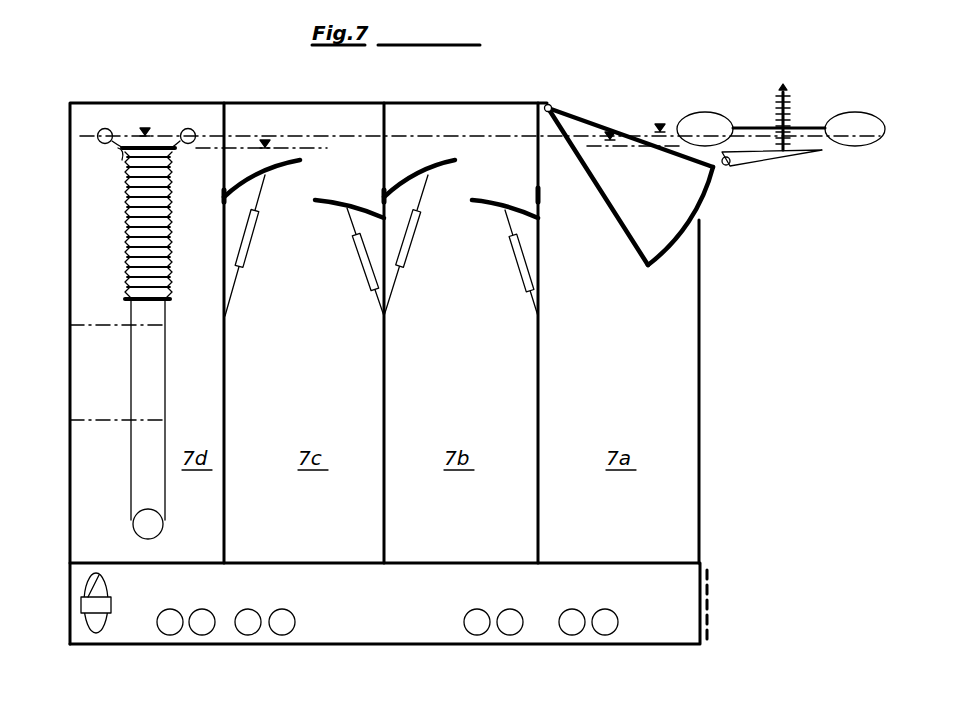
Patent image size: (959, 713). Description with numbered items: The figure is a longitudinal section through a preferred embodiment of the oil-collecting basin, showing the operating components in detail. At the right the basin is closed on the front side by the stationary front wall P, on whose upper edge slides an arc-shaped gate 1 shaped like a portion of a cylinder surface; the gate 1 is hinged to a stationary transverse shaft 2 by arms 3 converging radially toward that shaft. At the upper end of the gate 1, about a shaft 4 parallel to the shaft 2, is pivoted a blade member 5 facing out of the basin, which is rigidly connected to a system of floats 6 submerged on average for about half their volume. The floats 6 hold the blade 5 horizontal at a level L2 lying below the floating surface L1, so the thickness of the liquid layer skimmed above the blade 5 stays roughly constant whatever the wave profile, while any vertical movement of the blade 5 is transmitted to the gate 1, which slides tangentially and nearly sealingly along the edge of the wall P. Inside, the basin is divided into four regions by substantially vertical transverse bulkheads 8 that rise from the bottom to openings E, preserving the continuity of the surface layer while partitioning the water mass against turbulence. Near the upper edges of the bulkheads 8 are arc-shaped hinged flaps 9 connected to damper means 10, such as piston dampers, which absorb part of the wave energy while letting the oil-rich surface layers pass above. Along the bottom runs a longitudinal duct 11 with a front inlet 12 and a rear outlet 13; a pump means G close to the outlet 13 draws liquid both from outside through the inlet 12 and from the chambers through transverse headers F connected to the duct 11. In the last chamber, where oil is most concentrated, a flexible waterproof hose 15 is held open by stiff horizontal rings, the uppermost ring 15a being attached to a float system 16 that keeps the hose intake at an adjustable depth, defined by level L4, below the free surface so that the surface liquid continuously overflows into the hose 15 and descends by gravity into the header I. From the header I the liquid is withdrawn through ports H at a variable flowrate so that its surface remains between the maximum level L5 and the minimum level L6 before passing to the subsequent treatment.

The arc-shaped gate 1 is at (700, 205).
The stationary transverse shaft 2 is at (548, 104).
The arms 3 is at (632, 233).
The shaft 4 is at (730, 165).
The blade member 5 is at (752, 150).
The floats 6 is at (793, 100).
The transverse bulkheads 8 is at (225, 496).
The hinged flaps 9 is at (345, 200).
The damper means 10 is at (352, 240).
The bottom duct 11 is at (368, 628).
The front inlet 12 is at (708, 607).
The rear outlet 13 is at (70, 612).
The flexible waterproof hose 15 is at (125, 232).
The ring closest to the surface 15a is at (125, 150).
The float system 16 is at (105, 128).
The openings E is at (226, 185).
The transverse headers F is at (202, 628).
The pump means G is at (104, 620).
The ports H is at (135, 528).
The header I is at (131, 472).
The floating surface level L1 is at (660, 125).
The blade level L2 is at (610, 132).
The intake threshold level L4 is at (265, 140).
The maximum level in header L5 is at (99, 326).
The minimum level in header L6 is at (99, 421).
The front wall P is at (700, 345).